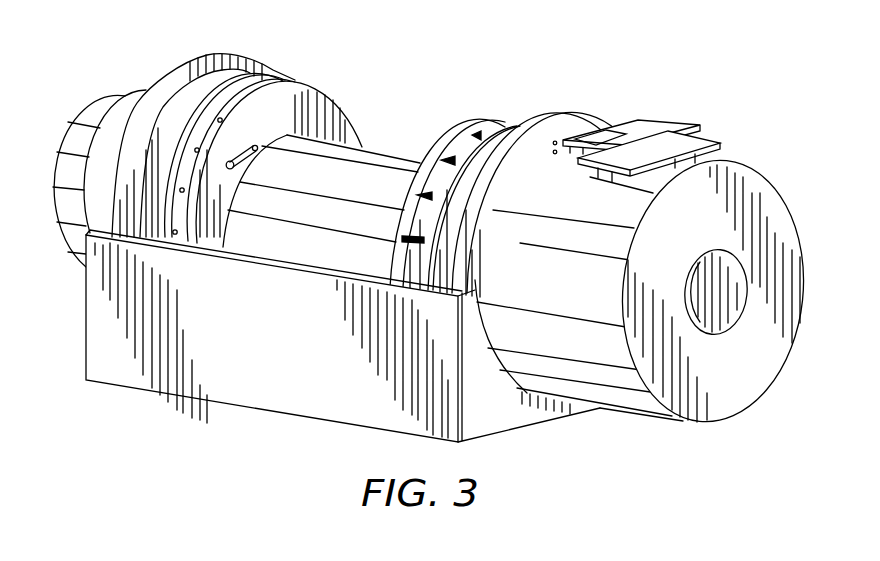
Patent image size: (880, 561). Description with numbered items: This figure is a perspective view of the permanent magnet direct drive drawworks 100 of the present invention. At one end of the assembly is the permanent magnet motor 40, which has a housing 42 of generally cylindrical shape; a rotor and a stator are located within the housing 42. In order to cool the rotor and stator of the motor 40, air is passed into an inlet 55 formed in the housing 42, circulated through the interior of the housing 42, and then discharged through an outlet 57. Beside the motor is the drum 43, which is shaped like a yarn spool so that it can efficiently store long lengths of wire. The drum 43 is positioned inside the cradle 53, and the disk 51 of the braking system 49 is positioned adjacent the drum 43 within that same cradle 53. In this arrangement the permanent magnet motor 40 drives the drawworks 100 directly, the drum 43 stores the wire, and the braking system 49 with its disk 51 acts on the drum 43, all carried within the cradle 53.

The permanent magnet direct drive drawworks 100 is at (430, 65).
The permanent magnet motor 40 is at (755, 180).
The housing 42 is at (630, 412).
The drum 43 is at (364, 148).
The braking system 49 is at (97, 103).
The disk 51 is at (255, 60).
The cradle 53 is at (182, 60).
The inlet 55 is at (648, 118).
The outlet 57 is at (703, 140).